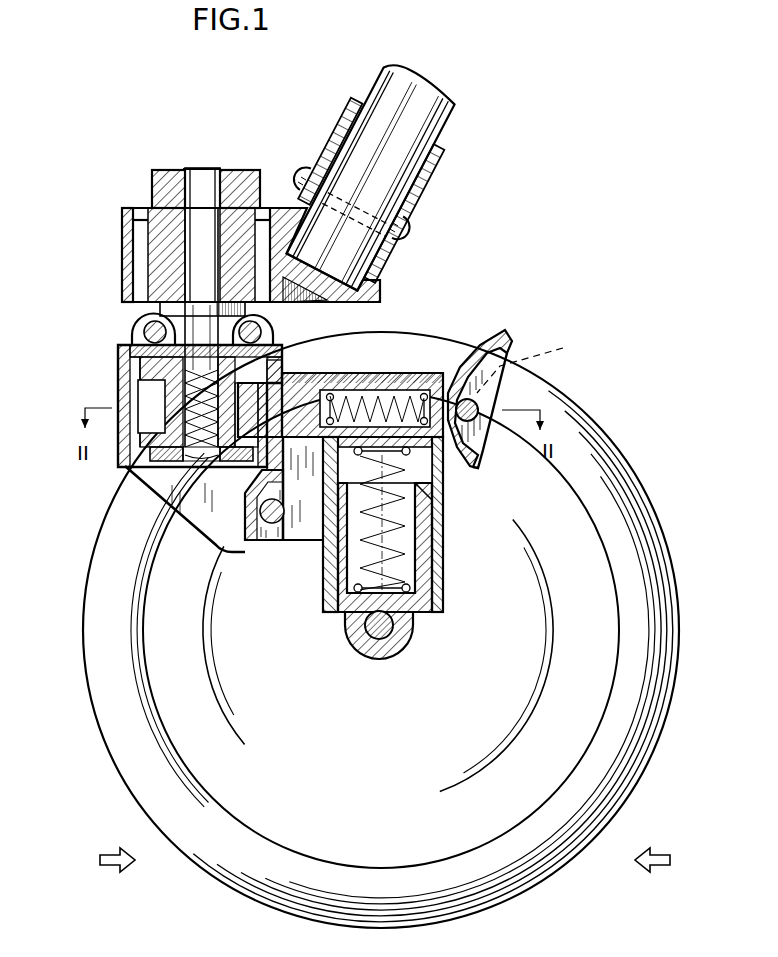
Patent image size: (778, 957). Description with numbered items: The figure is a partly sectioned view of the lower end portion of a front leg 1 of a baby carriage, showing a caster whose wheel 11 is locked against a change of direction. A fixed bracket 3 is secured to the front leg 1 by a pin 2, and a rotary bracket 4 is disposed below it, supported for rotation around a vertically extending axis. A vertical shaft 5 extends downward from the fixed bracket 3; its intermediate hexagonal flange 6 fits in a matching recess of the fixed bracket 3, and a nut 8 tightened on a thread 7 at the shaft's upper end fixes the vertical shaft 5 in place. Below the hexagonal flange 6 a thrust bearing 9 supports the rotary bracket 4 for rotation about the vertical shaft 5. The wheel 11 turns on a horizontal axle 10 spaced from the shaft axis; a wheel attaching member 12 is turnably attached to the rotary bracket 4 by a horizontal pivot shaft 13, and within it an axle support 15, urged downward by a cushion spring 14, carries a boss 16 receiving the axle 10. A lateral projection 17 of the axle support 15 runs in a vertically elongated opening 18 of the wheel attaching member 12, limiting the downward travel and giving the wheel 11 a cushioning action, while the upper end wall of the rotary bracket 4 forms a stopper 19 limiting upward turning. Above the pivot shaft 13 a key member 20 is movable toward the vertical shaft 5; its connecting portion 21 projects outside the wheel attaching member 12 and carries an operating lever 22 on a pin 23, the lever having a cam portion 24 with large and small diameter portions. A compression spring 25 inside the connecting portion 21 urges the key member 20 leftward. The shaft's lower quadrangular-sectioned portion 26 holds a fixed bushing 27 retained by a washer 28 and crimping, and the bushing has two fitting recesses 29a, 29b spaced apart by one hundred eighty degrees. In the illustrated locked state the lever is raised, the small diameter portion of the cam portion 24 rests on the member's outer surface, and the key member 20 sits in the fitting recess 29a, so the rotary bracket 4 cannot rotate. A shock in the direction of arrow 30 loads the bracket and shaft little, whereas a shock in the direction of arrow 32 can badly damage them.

The front leg 1 is at (438, 124).
The pin 2 is at (410, 243).
The fixed bracket 3 is at (120, 210).
The rotary bracket 4 is at (116, 358).
The vertical shaft 5 is at (215, 166).
The hexagonal flange 6 is at (245, 313).
The thread 7 is at (202, 168).
The nut 8 is at (170, 170).
The thrust bearing 9 is at (140, 325).
The axle 10 is at (372, 655).
The wheel 11 is at (578, 400).
The wheel attaching member 12 is at (446, 558).
The pivot shaft 13 is at (272, 526).
The cushion spring 14 is at (428, 610).
The axle support 15 is at (336, 610).
The boss 16 is at (397, 650).
The projection 17 is at (432, 500).
The elongated opening 18 is at (428, 475).
The stopper 19 is at (408, 380).
The key member 20 is at (300, 395).
The connecting portion 21 is at (533, 365).
The operating lever 22 is at (512, 330).
The pin 23 is at (478, 407).
The cam portion 24 is at (472, 455).
The spring 25 is at (382, 412).
The quadrangular-sectioned portion 26 is at (168, 465).
The fixed bushing 27 is at (133, 392).
The washer 28 is at (232, 466).
The fitting recess 29a is at (272, 362).
The fitting recess 29b is at (145, 455).
The arrow 30 is at (108, 855).
The arrow 32 is at (662, 850).